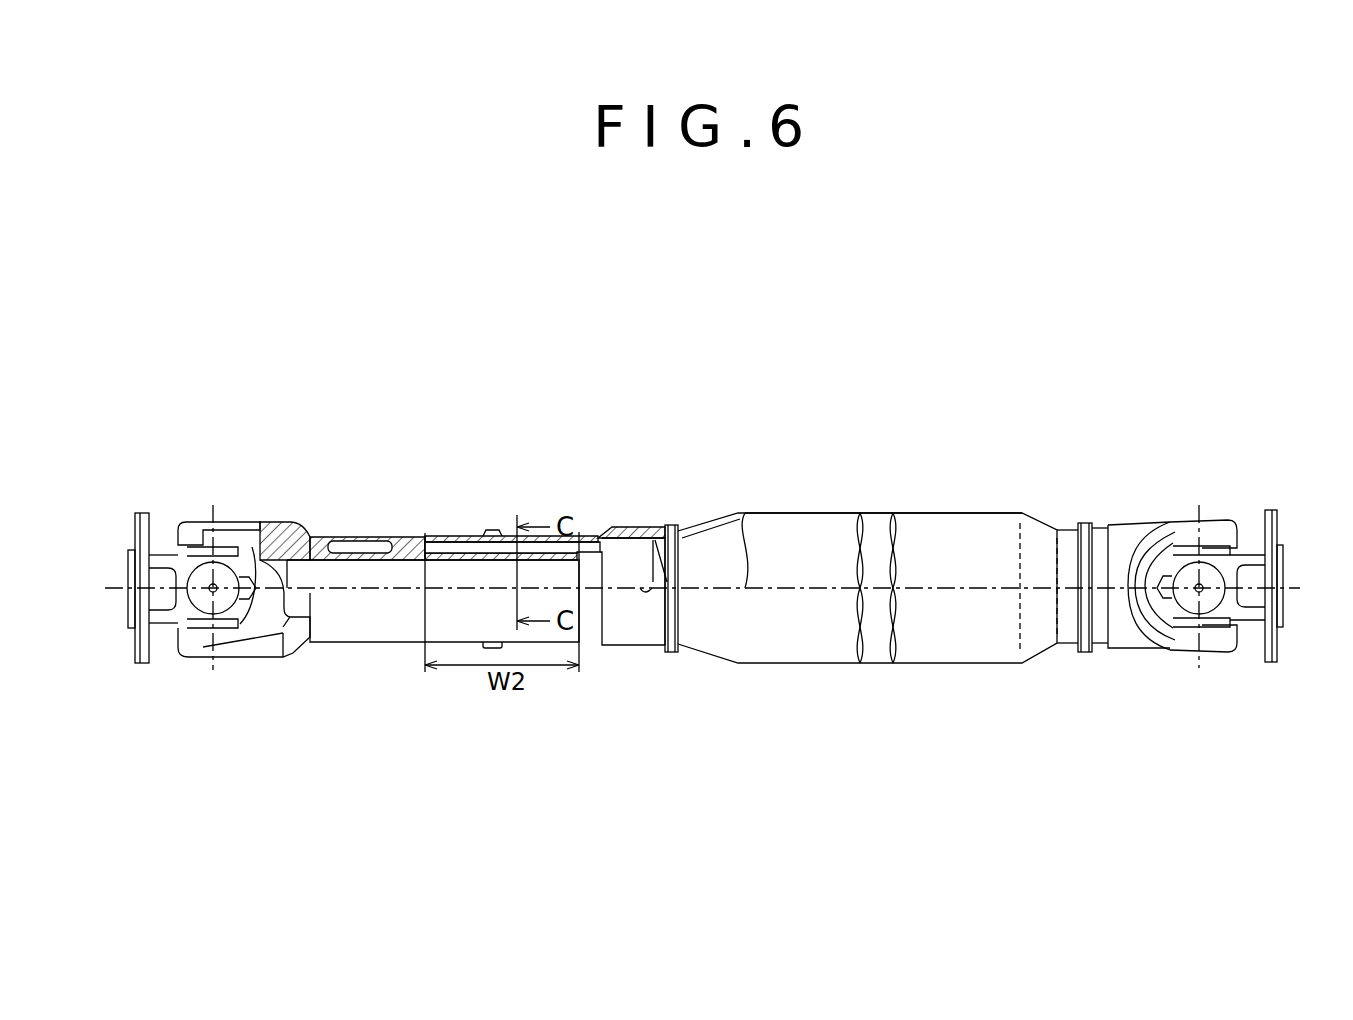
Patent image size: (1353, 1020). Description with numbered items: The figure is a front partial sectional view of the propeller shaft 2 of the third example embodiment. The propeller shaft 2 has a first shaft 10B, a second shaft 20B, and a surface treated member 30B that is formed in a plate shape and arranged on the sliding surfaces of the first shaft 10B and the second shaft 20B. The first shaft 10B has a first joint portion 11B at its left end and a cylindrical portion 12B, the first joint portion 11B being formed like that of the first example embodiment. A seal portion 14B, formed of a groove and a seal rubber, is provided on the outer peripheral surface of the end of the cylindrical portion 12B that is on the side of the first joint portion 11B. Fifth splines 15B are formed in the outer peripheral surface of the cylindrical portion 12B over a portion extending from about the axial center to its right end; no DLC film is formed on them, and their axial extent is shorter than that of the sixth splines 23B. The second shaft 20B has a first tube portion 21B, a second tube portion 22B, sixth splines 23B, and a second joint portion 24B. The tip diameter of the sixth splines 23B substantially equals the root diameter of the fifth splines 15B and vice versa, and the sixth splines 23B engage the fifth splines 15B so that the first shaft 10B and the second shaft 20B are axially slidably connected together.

The propeller shaft 2 is at (1005, 390).
The first shaft 10B is at (277, 518).
The first joint portion 11B is at (243, 652).
The cylindrical portion 12B is at (322, 572).
The seal portion 14B is at (317, 537).
The fifth splines 15B is at (465, 537).
The second shaft 20B is at (803, 510).
The first tube portion 21B is at (953, 528).
The second tube portion 22B is at (605, 533).
The sixth splines 23B is at (440, 537).
The second joint portion 24B is at (1125, 537).
The surface treated member 30B is at (477, 537).